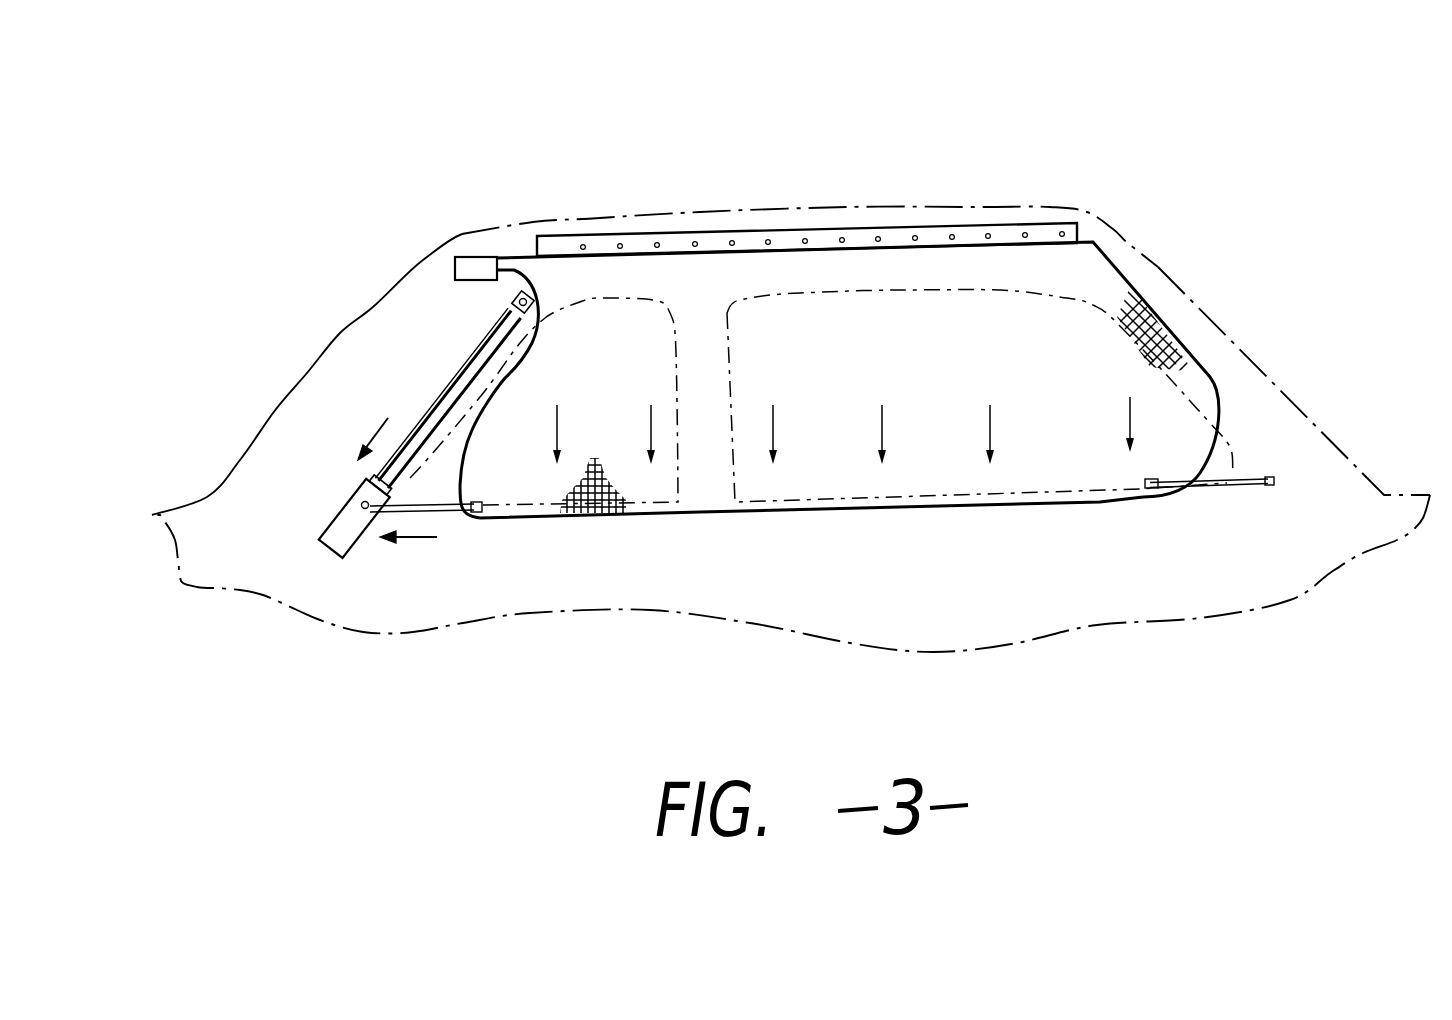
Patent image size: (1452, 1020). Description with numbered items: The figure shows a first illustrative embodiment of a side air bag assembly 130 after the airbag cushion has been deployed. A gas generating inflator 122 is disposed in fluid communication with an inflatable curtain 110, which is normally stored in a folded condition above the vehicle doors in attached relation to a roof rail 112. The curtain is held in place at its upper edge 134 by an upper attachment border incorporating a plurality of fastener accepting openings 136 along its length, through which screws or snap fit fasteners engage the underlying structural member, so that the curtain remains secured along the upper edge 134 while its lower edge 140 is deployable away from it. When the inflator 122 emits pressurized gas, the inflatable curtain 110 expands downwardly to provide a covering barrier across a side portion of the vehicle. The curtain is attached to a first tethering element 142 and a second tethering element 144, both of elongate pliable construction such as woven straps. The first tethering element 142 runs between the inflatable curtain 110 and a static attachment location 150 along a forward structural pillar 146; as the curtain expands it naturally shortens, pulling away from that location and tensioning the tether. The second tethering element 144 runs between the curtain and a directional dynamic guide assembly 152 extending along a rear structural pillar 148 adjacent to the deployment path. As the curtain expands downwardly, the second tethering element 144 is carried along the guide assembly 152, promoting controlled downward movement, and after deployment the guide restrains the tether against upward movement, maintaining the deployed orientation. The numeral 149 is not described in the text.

The inflatable curtain 110 is at (1210, 377).
The roof rail 112 is at (975, 207).
The gas generating inflator 122 is at (462, 256).
The side air bag assembly 130 is at (1197, 143).
The upper edge 134 is at (823, 232).
The fastener accepting openings 136 is at (618, 243).
The lower edge 140 is at (850, 512).
The first tethering element 142 is at (1221, 487).
The second tethering element 144 is at (452, 512).
The forward structural pillar 146 is at (1185, 290).
The rear structural pillar 148 is at (443, 392).
The second window panel 149 is at (728, 380).
The static attachment location 150 is at (1270, 477).
The directional dynamic guide assembly 152 is at (425, 393).